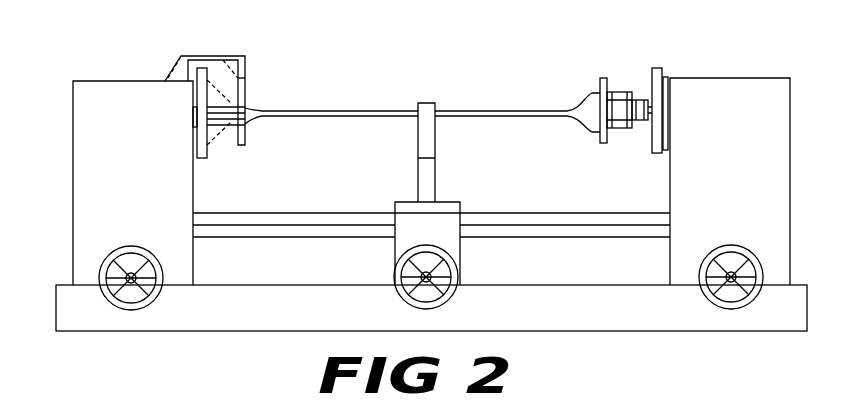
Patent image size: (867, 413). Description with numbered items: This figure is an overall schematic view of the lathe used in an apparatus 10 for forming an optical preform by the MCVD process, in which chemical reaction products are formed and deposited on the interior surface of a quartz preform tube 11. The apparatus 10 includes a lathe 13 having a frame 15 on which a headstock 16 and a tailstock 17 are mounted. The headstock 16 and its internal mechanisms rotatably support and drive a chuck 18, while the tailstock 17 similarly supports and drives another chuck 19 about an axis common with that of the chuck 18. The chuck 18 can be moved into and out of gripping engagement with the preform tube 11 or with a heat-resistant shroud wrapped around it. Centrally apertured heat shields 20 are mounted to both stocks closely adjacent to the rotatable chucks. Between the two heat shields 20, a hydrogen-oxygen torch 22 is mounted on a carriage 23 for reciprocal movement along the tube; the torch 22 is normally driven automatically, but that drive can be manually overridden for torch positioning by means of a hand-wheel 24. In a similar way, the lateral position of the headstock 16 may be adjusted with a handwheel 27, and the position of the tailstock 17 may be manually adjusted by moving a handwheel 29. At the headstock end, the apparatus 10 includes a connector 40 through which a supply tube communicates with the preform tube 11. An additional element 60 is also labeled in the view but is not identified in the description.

The apparatus 10 is at (415, 64).
The quartz preform tube 11 is at (328, 106).
The lathe 13 is at (268, 214).
The frame 15 is at (578, 322).
The headstock 16 is at (790, 130).
The tailstock 17 is at (73, 155).
The chuck 18 is at (661, 72).
The chuck 19 is at (207, 145).
The heat shields 20 is at (604, 104).
The hydrogen-oxygen torch 22 is at (419, 146).
The carriage 23 is at (395, 252).
The hand-wheel 24 is at (446, 291).
The handwheel 27 is at (700, 290).
The handwheel 29 is at (158, 293).
The connector 40 is at (603, 68).
The hub 60 is at (627, 92).